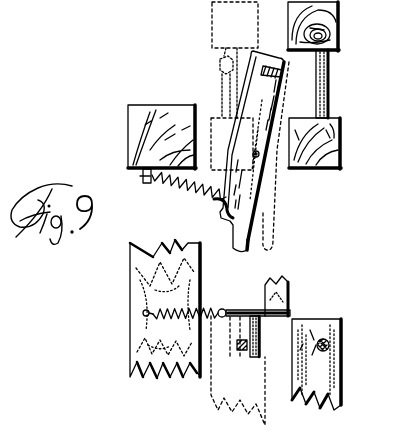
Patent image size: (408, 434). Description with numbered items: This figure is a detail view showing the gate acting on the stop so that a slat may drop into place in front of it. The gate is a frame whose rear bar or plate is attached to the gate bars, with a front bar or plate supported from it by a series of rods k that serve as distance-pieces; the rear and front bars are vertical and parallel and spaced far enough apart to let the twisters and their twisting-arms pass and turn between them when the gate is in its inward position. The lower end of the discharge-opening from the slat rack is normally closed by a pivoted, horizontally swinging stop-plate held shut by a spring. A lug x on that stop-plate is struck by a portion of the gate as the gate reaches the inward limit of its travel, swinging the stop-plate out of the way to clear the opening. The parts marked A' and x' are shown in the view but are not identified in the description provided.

The support block A' is at (147, 241).
The lug x is at (254, 231).
The spring x' is at (189, 211).
The rods k is at (330, 98).